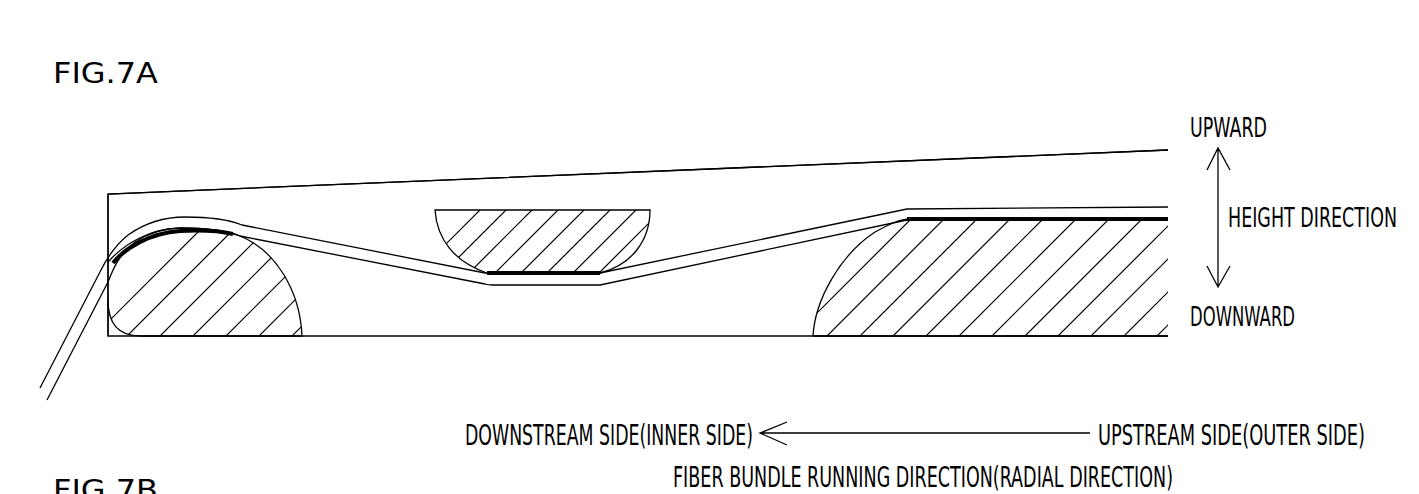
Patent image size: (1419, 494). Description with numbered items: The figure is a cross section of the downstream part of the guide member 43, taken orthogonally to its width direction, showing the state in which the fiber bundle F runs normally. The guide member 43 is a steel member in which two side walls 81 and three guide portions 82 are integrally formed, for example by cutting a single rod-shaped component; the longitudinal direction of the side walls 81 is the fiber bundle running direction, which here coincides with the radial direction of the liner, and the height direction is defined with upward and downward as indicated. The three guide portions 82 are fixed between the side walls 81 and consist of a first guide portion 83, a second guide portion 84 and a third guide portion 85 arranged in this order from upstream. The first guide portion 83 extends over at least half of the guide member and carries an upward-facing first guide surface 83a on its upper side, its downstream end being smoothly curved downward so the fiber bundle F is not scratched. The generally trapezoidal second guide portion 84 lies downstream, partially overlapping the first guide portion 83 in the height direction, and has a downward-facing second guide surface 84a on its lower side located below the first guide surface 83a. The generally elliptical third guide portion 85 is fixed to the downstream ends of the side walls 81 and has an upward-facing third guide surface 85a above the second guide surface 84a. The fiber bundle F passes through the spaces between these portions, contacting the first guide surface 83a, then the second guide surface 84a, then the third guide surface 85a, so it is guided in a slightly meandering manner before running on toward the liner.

The guide member 43 is at (95, 195).
The side walls 81 is at (431, 322).
The guide portions 82 is at (691, 253).
The first guide portion 83 is at (973, 237).
The first guide surface 83a is at (1068, 318).
The second guide portion 84 is at (490, 225).
The second guide surface 84a is at (563, 190).
The third guide portion 85 is at (273, 322).
The third guide surface 85a is at (197, 327).
The fiber bundle F is at (773, 240).